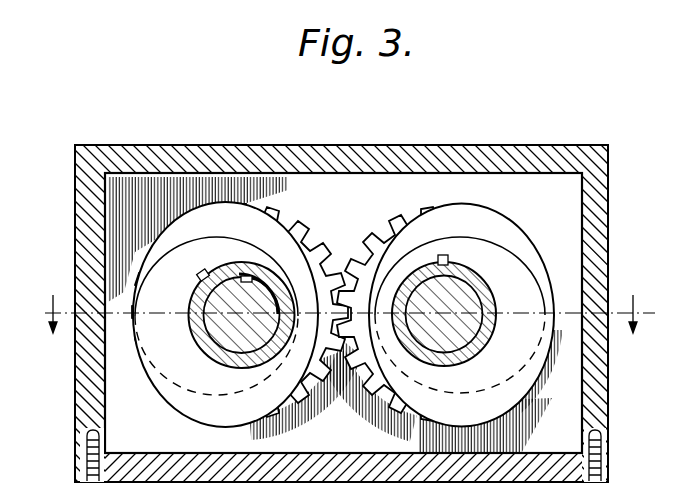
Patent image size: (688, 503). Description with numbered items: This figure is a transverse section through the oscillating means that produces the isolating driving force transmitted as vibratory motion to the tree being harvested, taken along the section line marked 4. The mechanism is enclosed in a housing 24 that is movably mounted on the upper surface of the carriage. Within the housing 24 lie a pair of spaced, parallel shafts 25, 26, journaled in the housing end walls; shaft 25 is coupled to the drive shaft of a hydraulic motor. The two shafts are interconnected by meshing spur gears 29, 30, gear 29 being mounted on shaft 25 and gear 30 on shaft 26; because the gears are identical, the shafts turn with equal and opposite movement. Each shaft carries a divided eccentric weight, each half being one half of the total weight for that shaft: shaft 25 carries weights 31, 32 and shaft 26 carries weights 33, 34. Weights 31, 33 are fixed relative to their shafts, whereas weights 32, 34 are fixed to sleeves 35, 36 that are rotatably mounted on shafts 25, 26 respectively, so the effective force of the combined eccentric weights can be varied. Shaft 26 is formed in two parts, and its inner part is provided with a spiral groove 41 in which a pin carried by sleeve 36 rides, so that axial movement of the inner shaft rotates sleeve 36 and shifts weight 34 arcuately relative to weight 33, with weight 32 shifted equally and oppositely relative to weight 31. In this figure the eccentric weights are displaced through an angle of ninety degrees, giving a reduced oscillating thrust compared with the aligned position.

The section line 4- 4 is at (341, 321).
The housing 24 is at (290, 146).
The shaft 25 is at (470, 311).
The shaft 26 is at (220, 312).
The spur gear 29 is at (351, 250).
The spur gear 30 is at (329, 250).
The weight 31 is at (510, 232).
The weight 32 is at (512, 403).
The weight 33 is at (161, 238).
The weight 34 is at (188, 403).
The sleeve 35 is at (488, 356).
The sleeve 36 is at (212, 355).
The spiral groove 41 is at (255, 265).